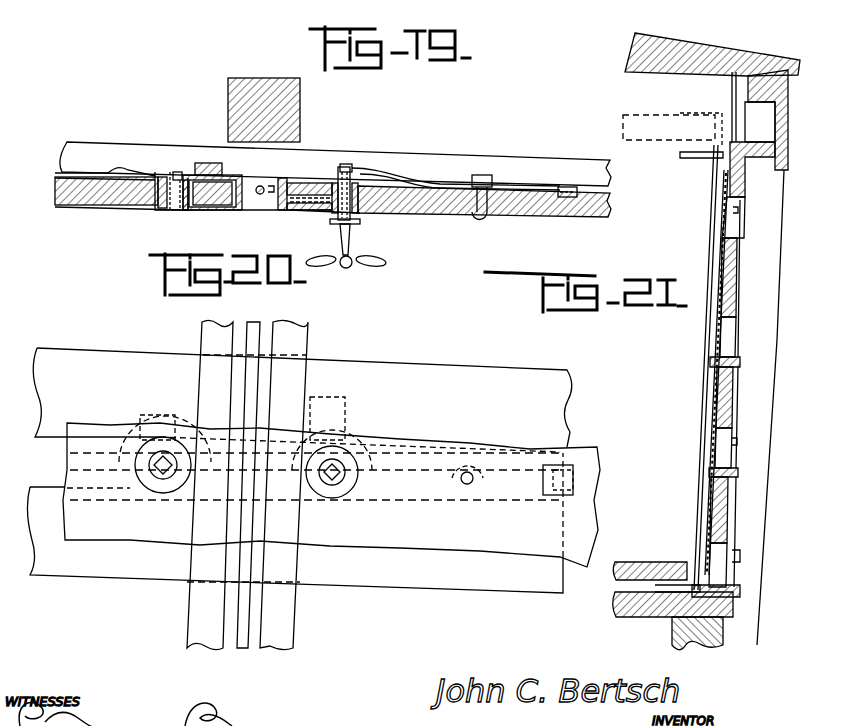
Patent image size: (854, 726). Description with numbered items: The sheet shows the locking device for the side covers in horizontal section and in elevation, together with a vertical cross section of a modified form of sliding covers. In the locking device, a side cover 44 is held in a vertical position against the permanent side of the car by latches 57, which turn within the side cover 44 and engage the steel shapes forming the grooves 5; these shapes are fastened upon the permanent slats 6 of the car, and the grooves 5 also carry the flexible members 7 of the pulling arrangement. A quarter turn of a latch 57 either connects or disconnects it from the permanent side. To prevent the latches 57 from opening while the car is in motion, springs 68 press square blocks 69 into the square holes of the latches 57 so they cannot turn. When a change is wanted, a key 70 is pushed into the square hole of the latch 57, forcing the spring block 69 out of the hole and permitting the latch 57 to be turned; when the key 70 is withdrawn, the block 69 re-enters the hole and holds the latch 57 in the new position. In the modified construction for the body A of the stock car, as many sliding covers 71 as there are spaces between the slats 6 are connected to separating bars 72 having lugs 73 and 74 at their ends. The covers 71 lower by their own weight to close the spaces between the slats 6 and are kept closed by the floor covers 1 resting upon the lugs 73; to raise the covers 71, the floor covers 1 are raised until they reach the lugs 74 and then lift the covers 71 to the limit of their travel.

In FIG. 21, the floor covers 1 is at (637, 122).
In FIG. 19, the grooves 5 is at (260, 203).
In FIG. 20, the grooves 5 is at (233, 602).
In FIG. 19, the slats 6 is at (475, 163).
In FIG. 20, the slats 6 is at (299, 470).
In FIG. 21, the slats 6 is at (722, 410).
In FIG. 19, the flexible members 7 is at (263, 187).
In FIG. 20, the flexible members 7 is at (253, 333).
In FIG. 19, the side covers 44 is at (510, 203).
In FIG. 20, the side covers 44 is at (331, 495).
In FIG. 19, the latches 57 is at (172, 212).
In FIG. 20, the latches 57 is at (156, 486).
In FIG. 19, the springs 68 is at (88, 175).
In FIG. 20, the springs 68 is at (459, 494).
In FIG. 19, the square blocks 69 is at (173, 172).
In FIG. 19, the key 70 is at (354, 250).
In FIG. 21, the sliding covers 71 is at (722, 226).
In FIG. 21, the separating bars 72 is at (712, 333).
In FIG. 21, the lugs 73 is at (670, 600).
In FIG. 21, the lugs 74 is at (692, 112).
In FIG. 21, the body of a stock car A is at (690, 62).